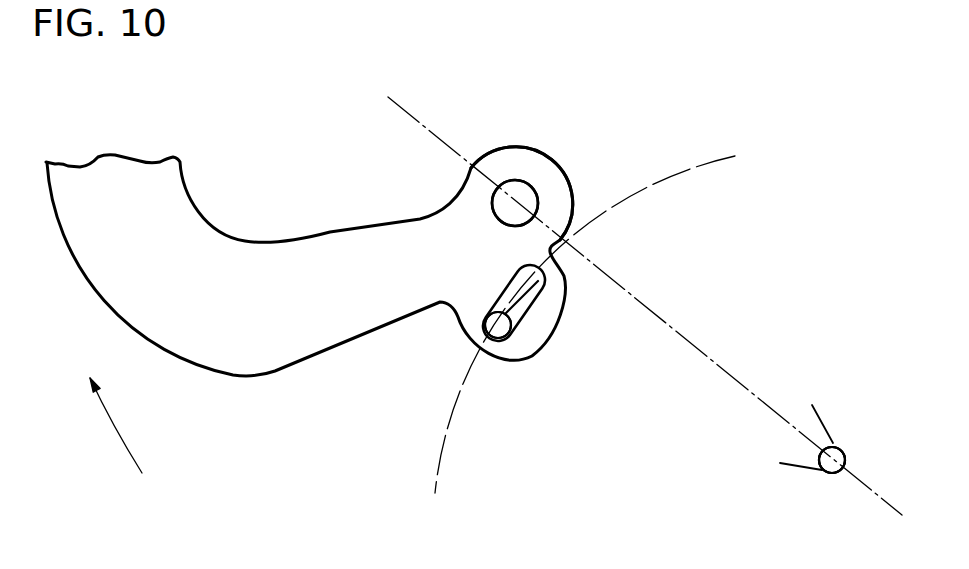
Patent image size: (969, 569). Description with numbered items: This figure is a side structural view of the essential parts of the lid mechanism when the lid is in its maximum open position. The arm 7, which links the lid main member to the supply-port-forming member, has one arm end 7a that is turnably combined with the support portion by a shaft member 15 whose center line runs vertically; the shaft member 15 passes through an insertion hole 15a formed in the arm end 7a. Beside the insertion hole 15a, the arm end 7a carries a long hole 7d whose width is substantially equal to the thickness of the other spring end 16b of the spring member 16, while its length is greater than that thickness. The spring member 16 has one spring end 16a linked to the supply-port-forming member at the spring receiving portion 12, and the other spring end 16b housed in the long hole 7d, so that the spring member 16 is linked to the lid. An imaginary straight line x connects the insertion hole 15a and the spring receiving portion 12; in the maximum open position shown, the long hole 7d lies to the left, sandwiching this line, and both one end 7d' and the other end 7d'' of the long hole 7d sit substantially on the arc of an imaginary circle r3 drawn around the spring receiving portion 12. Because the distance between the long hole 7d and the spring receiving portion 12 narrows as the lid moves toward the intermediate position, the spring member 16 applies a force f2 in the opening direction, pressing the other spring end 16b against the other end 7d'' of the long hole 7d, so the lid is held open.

The arm 7 is at (249, 337).
The arm end 7a is at (550, 177).
The long hole 7d is at (545, 334).
The one end of the long hole 7d' is at (567, 307).
The other end of the long hole 7d'' is at (512, 379).
The shaft member 15 is at (500, 188).
The insertion hole 15a is at (523, 179).
The spring member 16 is at (833, 448).
The one spring end 16a is at (833, 448).
The other spring end 16b is at (494, 327).
The spring receiving portion 12 is at (846, 463).
The imaginary circle r3 is at (696, 168).
The force in a direction of opening the lid f2 is at (133, 457).
The imaginary straight line x is at (645, 302).